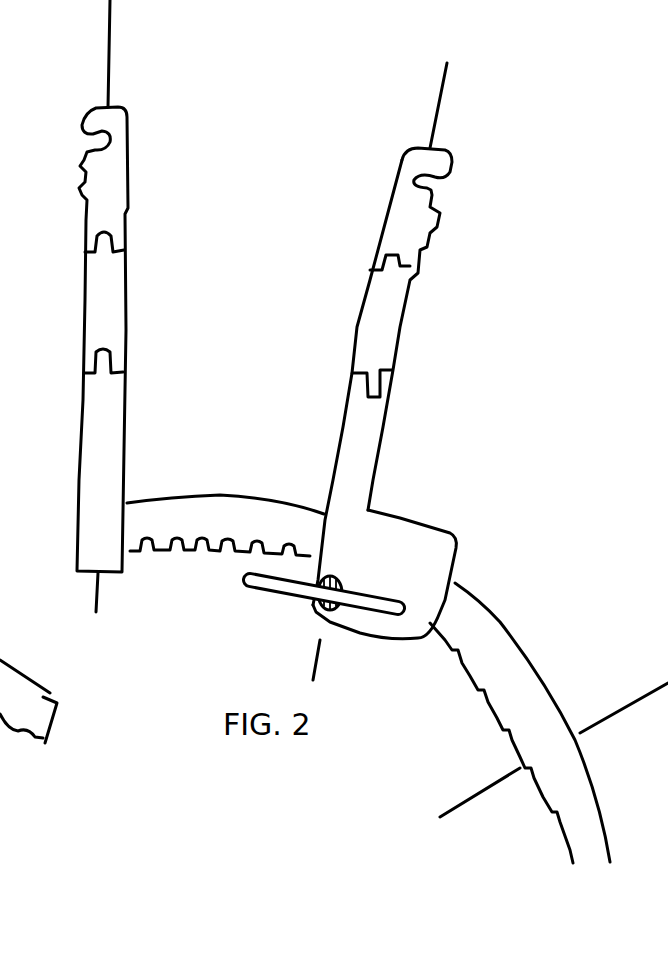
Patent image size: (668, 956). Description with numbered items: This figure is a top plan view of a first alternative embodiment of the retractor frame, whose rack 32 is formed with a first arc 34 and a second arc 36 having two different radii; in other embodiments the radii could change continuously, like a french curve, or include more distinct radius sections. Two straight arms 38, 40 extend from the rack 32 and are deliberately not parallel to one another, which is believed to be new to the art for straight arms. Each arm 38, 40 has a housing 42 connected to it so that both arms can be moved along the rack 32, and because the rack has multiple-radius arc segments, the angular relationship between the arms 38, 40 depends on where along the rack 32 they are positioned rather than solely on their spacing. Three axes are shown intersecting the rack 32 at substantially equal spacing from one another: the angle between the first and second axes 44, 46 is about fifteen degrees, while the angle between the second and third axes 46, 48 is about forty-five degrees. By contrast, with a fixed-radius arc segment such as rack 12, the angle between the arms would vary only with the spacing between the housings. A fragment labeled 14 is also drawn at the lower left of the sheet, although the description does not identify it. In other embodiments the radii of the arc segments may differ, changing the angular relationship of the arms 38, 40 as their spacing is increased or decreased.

The rack 12 is at (25, 656).
The mounting flange 14 is at (53, 690).
The rack 32 is at (194, 534).
The first arc 34 is at (253, 513).
The second arc 36 is at (480, 622).
The first arm 38 is at (92, 302).
The second arm 40 is at (393, 327).
The housing 42 is at (412, 576).
The first axis 44 is at (108, 62).
The second axis 46 is at (440, 105).
The third axis 48 is at (641, 699).